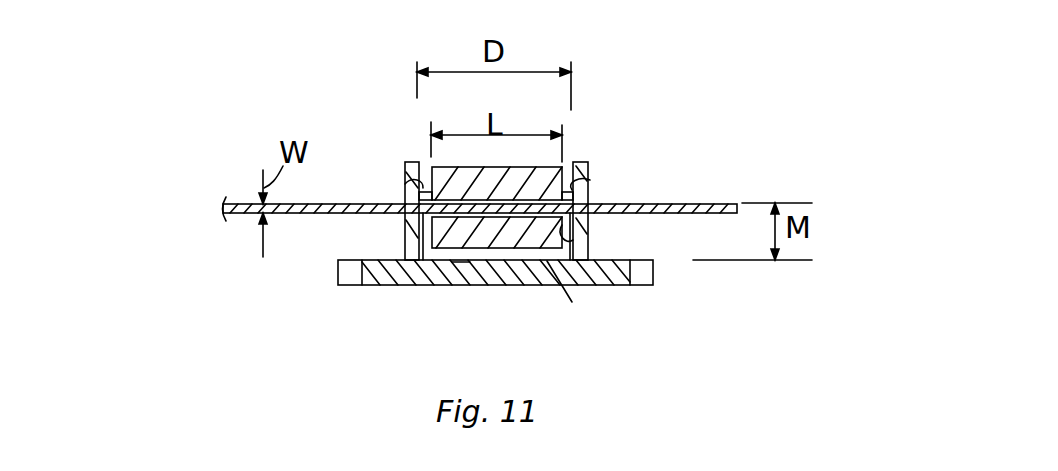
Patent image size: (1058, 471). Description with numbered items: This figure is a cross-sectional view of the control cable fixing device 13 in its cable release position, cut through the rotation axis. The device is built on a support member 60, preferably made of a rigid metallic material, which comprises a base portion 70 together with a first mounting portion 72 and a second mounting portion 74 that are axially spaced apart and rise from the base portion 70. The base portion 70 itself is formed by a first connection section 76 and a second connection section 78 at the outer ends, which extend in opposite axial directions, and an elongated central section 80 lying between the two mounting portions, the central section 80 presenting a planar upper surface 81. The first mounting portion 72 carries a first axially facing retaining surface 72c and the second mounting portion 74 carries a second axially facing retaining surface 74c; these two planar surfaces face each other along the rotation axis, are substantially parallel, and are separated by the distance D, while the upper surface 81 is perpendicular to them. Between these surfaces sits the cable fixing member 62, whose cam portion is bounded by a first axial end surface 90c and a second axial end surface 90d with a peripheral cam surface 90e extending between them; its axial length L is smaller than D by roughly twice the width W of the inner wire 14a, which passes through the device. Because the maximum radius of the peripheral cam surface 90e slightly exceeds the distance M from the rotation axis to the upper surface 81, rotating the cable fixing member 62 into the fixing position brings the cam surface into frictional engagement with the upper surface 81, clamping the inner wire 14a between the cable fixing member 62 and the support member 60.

The control cable fixing device 13 is at (660, 105).
The inner wire 14a is at (240, 203).
The second mounting portion 74 is at (410, 161).
The second axially facing retaining surface 74c is at (406, 168).
The second axial end surface 90d is at (405, 184).
The first mounting portion 72 is at (582, 161).
The first axially facing retaining surface 72c is at (590, 180).
The support member 60 is at (594, 168).
The cable fixing member 62 is at (410, 232).
The first axial end surface 90c is at (575, 245).
The base portion 70 is at (373, 286).
The second connection section 78 is at (350, 280).
The first connection section 76 is at (650, 287).
The elongated central section 80 is at (507, 273).
The upper surface 81 is at (448, 268).
The peripheral cam surface 90e is at (547, 261).